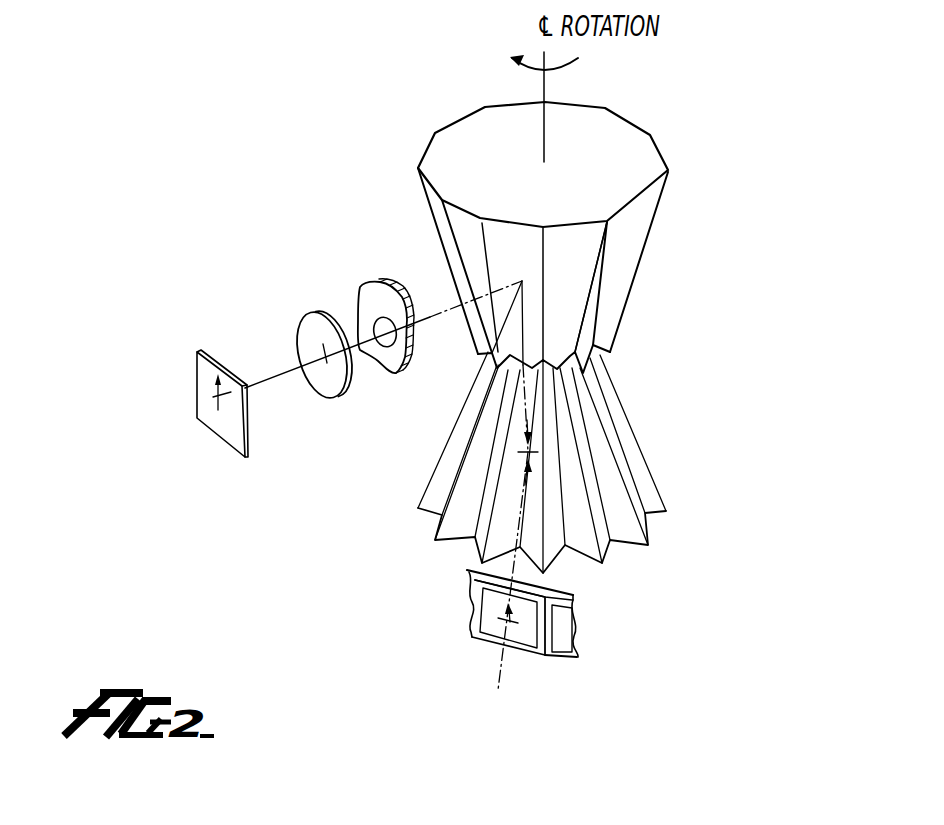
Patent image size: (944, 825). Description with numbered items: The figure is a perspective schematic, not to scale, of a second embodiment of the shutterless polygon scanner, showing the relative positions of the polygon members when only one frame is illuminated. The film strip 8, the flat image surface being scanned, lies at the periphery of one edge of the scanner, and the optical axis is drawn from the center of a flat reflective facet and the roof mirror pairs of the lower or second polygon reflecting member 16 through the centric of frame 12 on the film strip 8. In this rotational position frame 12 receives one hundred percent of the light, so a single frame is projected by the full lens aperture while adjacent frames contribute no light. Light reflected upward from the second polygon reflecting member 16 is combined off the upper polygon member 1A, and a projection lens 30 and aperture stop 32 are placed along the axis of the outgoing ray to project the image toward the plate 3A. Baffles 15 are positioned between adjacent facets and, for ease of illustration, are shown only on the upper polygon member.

The rotating multi-faceted mirror 1A is at (654, 238).
The baffles 15 is at (603, 336).
The second polygon reflecting member 16 is at (660, 447).
The film strip 8 is at (558, 591).
The film frame 12 is at (525, 637).
The projection lens 30 is at (366, 292).
The aperture stop 32 is at (305, 316).
The light source plate 3A is at (212, 352).